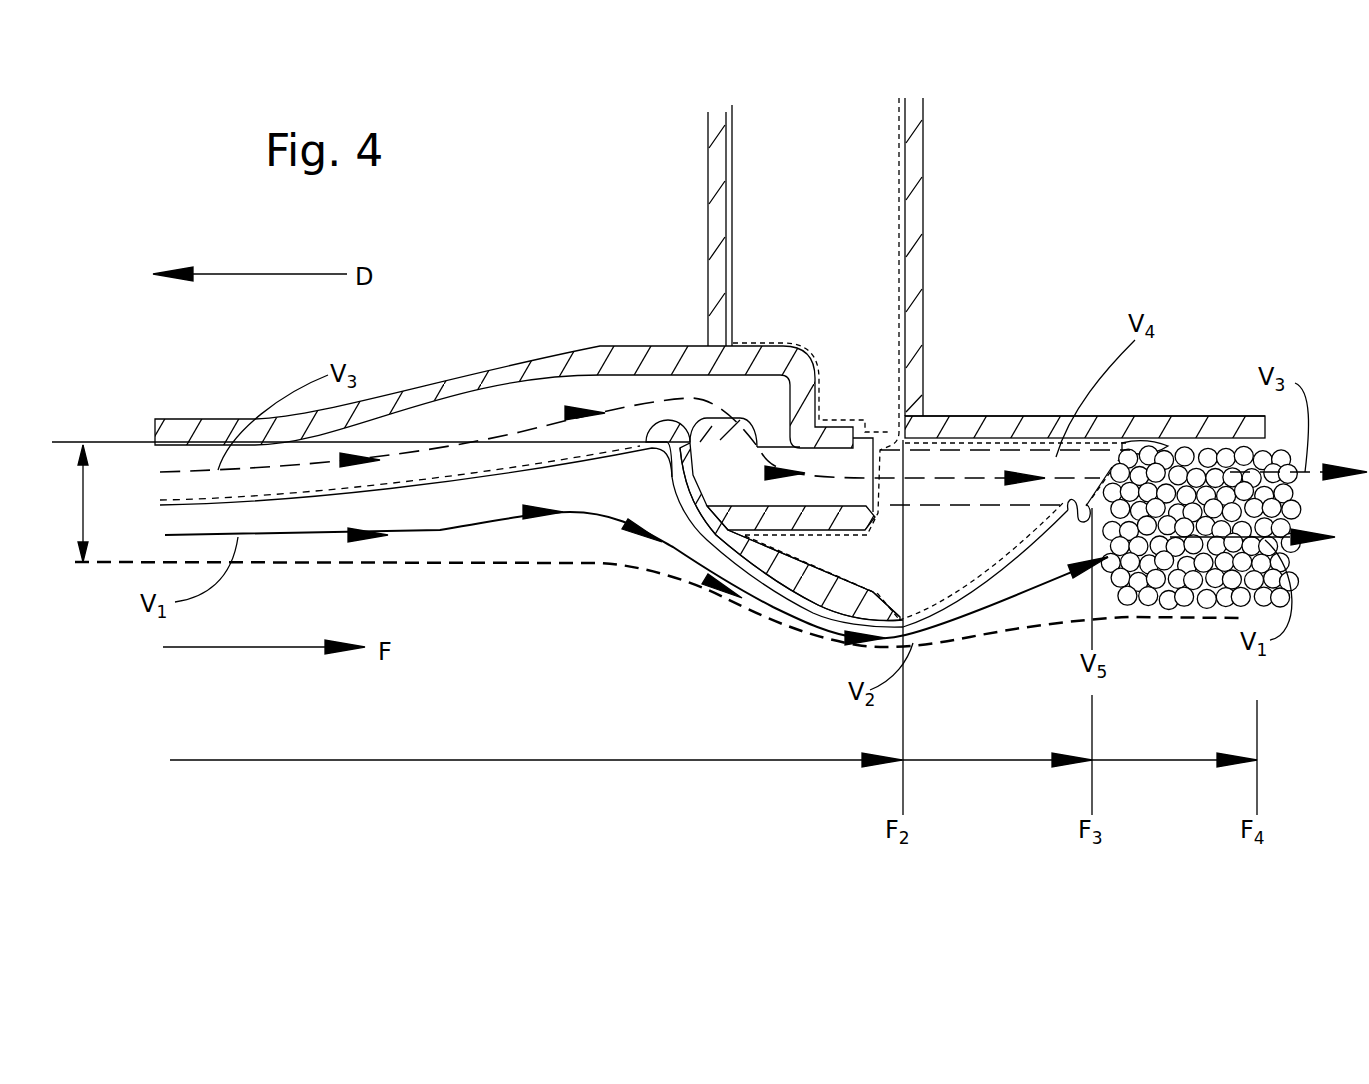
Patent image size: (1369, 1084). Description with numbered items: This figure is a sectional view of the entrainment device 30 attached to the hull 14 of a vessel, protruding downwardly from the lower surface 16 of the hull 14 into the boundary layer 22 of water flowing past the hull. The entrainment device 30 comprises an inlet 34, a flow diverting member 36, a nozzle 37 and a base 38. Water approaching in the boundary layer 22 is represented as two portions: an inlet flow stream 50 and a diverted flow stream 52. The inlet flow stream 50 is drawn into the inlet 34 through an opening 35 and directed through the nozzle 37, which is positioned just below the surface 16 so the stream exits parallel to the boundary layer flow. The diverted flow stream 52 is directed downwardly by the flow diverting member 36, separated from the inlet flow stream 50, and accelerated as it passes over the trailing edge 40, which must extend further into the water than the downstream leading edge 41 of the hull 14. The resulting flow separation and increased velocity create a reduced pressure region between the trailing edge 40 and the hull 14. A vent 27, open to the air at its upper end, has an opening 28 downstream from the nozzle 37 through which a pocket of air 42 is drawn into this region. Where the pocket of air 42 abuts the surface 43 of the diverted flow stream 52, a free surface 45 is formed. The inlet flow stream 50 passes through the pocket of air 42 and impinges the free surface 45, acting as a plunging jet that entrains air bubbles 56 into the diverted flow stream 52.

The hull 14 is at (1110, 424).
The lower surface 16 is at (998, 440).
The boundary layer 22 is at (82, 503).
The vent 27 is at (840, 193).
The opening 28 is at (848, 350).
The entrainment device 30 is at (572, 603).
The inlet 34 is at (424, 433).
The opening 35 is at (498, 444).
The flow diverting member 36 is at (747, 563).
The nozzle 37 is at (867, 462).
The base 38 is at (539, 382).
The trailing edge 40 is at (930, 607).
The downstream leading edge 41 is at (996, 445).
The pocket of air 42 is at (917, 550).
The surface 43 is at (1043, 528).
The free surface 45 is at (1018, 557).
The inlet flow stream 50 is at (196, 470).
The diverted flow stream 52 is at (325, 537).
The air bubbles 56 is at (1193, 567).